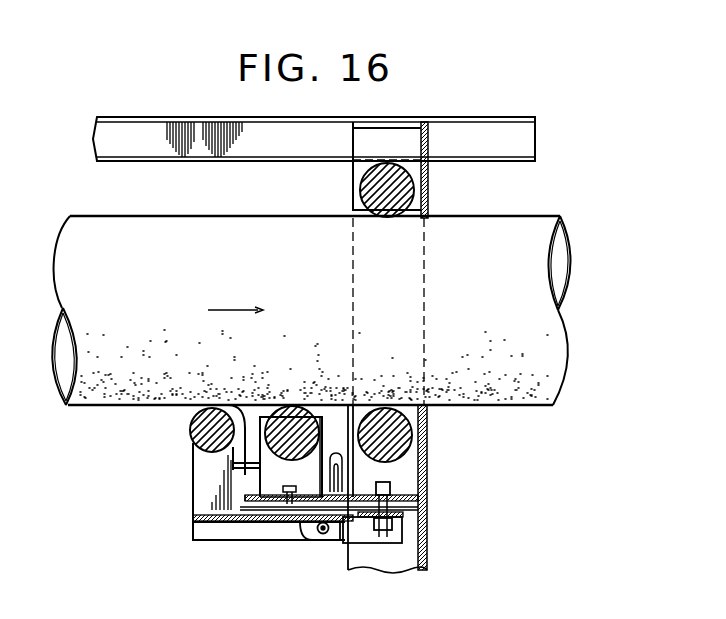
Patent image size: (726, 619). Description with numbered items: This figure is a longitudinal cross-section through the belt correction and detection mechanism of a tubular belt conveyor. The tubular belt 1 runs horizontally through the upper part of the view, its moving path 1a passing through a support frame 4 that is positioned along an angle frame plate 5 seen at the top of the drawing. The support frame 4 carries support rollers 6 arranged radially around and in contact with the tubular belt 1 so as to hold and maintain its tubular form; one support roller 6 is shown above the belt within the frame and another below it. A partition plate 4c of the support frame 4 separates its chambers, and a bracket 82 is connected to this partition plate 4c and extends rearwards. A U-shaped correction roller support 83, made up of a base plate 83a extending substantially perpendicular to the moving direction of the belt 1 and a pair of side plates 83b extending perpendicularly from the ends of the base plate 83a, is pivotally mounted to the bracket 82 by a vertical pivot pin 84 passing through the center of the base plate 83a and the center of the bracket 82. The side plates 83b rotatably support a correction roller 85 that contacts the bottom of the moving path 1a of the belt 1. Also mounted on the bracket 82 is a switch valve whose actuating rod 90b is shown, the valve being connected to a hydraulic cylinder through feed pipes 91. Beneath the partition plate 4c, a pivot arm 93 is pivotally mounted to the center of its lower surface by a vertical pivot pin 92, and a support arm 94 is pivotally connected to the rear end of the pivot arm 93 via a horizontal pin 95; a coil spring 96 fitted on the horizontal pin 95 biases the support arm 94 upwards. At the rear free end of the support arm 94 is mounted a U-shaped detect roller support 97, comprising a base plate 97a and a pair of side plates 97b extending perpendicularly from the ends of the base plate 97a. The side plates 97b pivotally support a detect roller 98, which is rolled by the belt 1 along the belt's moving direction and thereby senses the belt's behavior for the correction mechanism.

The tubular belt 1 is at (580, 256).
The moving path 1a is at (572, 352).
The support frame 4 is at (461, 198).
The partition plate 4c is at (415, 497).
The angle frame plate 5 is at (535, 140).
The support roller 6 is at (360, 192).
The bracket 82 is at (266, 497).
The correction roller support 83 is at (258, 417).
The base plate 83a is at (270, 498).
The side plate 83b is at (319, 417).
The vertical pivot pin 84 is at (287, 486).
The correction roller 85 is at (288, 407).
The actuating rod 90b is at (228, 405).
The feed pipe 91 is at (338, 463).
The vertical pivot pin 92 is at (420, 512).
The pivot arm 93 is at (403, 531).
The support arm 94 is at (200, 542).
The horizontal pin 95 is at (338, 540).
The coil spring 96 is at (300, 538).
The detect roller support 97 is at (183, 465).
The base plate 97a is at (200, 514).
The side plate 97b is at (200, 486).
The detect roller 98 is at (190, 428).